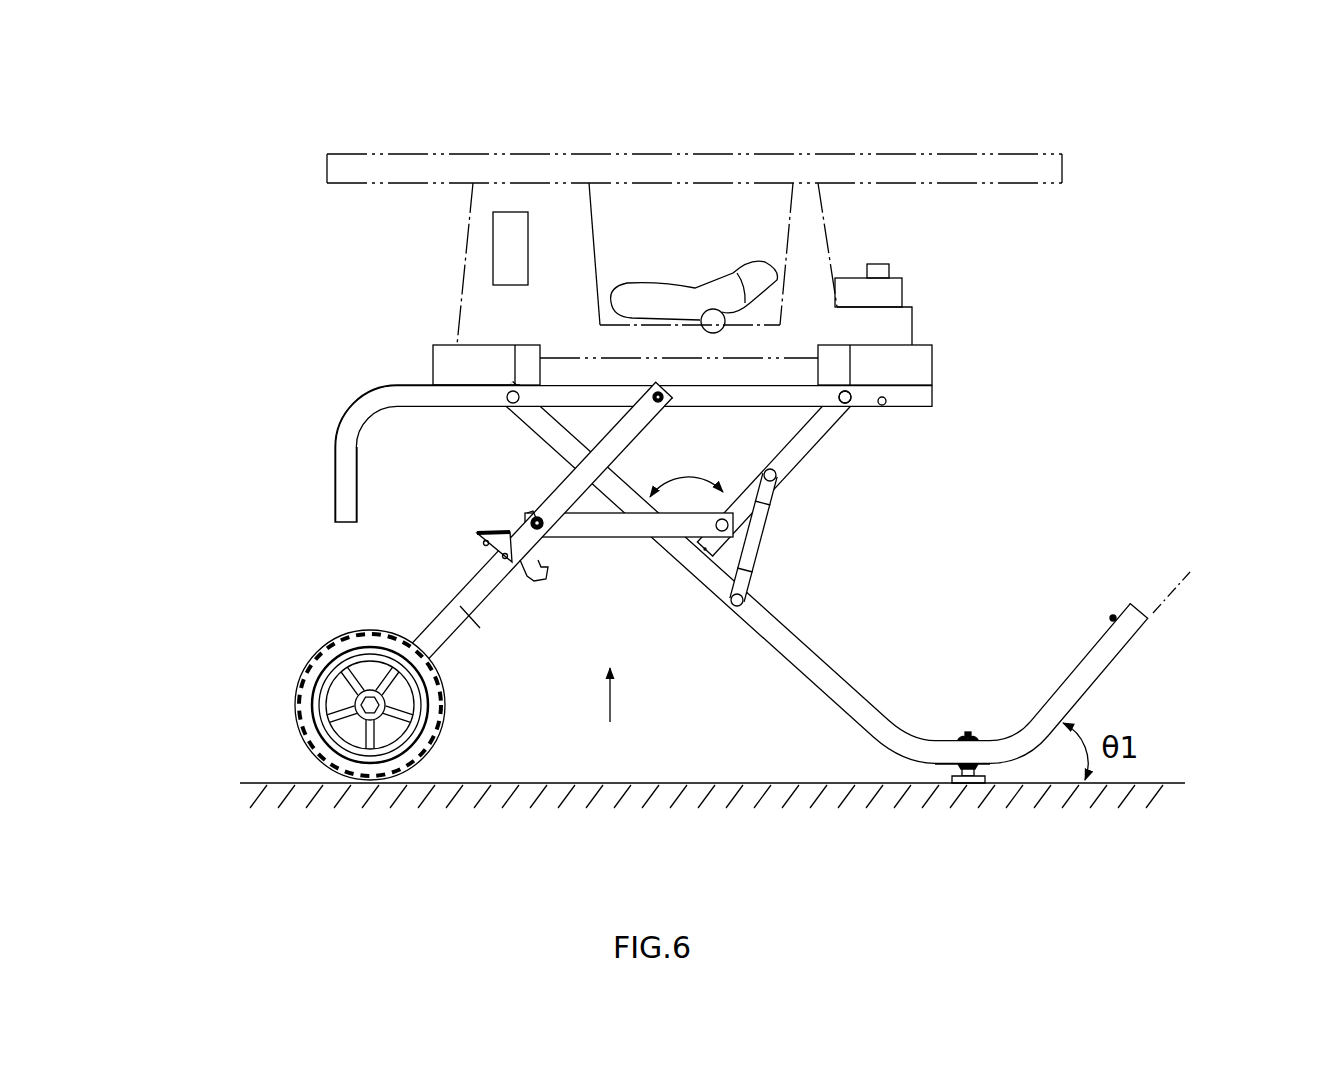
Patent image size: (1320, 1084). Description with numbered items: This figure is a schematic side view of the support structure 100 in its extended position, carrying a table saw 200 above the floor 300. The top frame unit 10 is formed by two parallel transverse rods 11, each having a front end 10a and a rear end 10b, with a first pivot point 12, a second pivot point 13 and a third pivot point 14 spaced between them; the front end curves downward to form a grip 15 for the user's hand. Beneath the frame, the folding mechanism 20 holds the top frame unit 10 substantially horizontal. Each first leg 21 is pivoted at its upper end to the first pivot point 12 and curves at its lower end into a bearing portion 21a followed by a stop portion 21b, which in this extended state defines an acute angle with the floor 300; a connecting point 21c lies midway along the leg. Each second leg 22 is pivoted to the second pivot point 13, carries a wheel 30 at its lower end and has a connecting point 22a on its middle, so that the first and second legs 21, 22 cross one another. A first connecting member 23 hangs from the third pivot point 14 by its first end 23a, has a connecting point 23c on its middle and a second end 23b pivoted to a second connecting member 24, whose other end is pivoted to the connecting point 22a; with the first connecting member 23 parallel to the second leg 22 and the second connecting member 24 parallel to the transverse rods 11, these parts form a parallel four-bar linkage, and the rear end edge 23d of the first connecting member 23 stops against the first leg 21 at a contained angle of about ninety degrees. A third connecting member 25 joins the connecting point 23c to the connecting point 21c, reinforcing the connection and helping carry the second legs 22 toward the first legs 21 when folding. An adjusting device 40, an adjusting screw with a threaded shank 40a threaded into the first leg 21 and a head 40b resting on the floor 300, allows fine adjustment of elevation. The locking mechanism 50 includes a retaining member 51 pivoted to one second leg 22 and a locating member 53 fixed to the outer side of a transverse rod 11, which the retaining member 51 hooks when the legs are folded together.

The support structure 100 is at (692, 550).
The table saw 200 is at (764, 154).
The floor 300 is at (1160, 783).
The top frame unit 10 is at (628, 412).
The front end 10a is at (345, 415).
The rear end 10b is at (905, 392).
The transverse rod 11 is at (417, 397).
The first pivot point 12 is at (508, 393).
The second pivot point 13 is at (655, 392).
The third pivot point 14 is at (848, 393).
The first end 23a is at (845, 397).
The grip 15 is at (333, 483).
The folding mechanism 20 is at (472, 620).
The first leg 21 is at (890, 629).
The bearing portion 21a is at (990, 762).
The stop portion 21b is at (1112, 650).
The connecting point 21c is at (739, 607).
The second leg 22 is at (433, 617).
The connecting point 22a is at (535, 517).
The first connecting member 23 is at (827, 428).
The second end 23b is at (720, 542).
The connecting point 23c is at (778, 479).
The rear end edge 23d is at (695, 538).
The second connecting member 24 is at (613, 537).
The third connecting member 25 is at (765, 543).
The wheel 30 is at (296, 690).
The adjusting device 40 is at (969, 820).
The threaded shank 40a is at (965, 745).
The head 40b is at (994, 815).
The locking mechanism 50 is at (481, 552).
The retaining member 51 is at (535, 581).
The locating member 53 is at (886, 405).